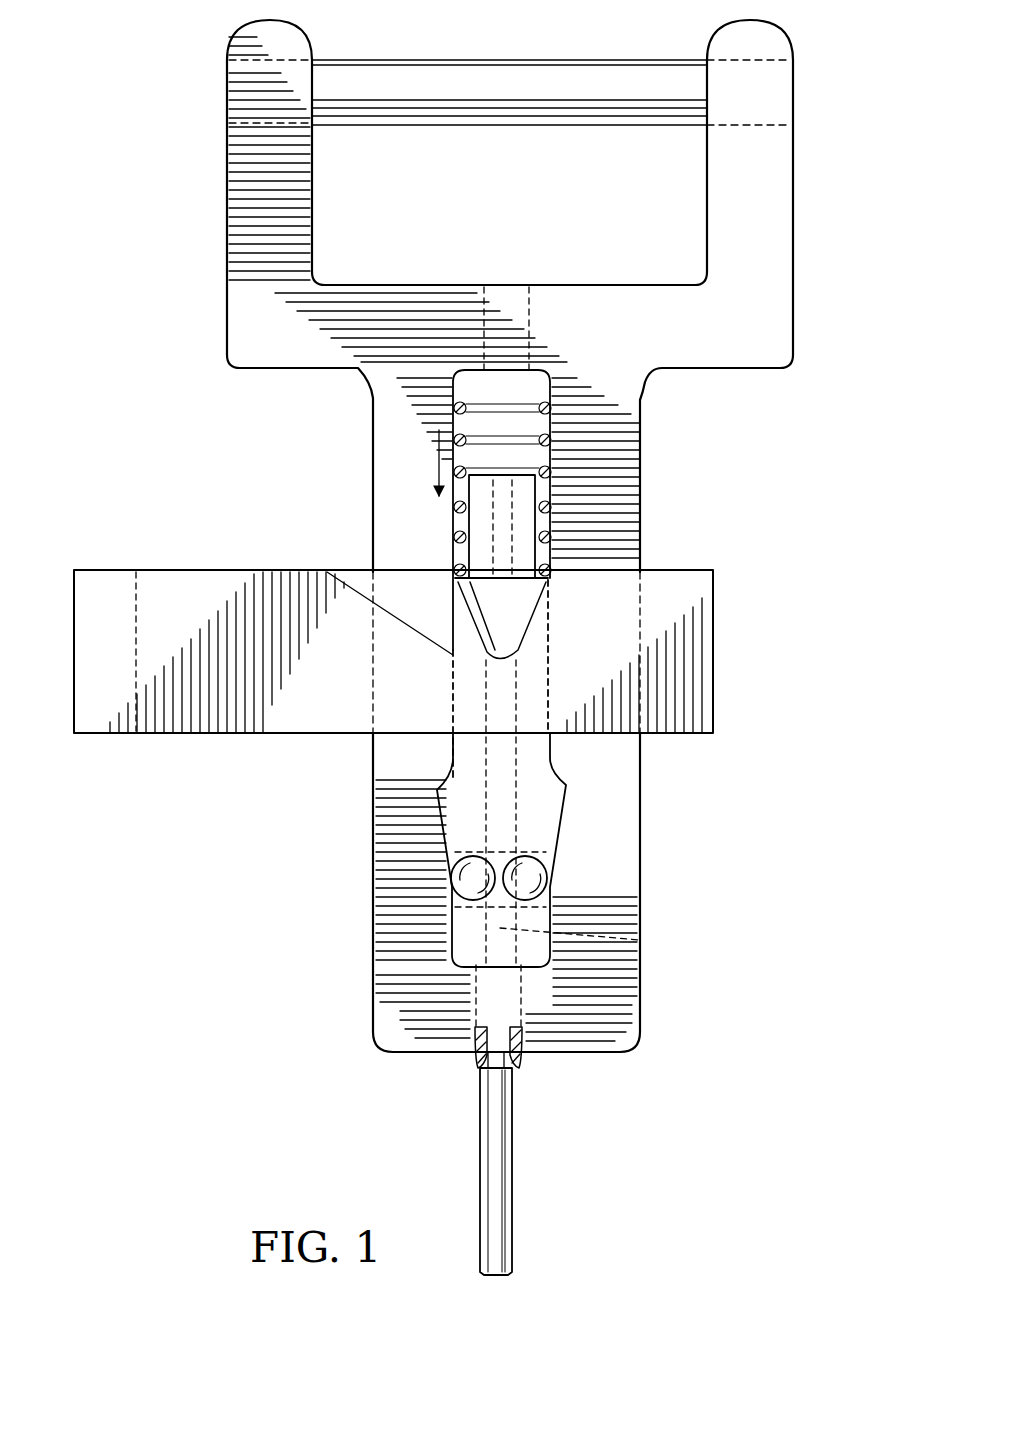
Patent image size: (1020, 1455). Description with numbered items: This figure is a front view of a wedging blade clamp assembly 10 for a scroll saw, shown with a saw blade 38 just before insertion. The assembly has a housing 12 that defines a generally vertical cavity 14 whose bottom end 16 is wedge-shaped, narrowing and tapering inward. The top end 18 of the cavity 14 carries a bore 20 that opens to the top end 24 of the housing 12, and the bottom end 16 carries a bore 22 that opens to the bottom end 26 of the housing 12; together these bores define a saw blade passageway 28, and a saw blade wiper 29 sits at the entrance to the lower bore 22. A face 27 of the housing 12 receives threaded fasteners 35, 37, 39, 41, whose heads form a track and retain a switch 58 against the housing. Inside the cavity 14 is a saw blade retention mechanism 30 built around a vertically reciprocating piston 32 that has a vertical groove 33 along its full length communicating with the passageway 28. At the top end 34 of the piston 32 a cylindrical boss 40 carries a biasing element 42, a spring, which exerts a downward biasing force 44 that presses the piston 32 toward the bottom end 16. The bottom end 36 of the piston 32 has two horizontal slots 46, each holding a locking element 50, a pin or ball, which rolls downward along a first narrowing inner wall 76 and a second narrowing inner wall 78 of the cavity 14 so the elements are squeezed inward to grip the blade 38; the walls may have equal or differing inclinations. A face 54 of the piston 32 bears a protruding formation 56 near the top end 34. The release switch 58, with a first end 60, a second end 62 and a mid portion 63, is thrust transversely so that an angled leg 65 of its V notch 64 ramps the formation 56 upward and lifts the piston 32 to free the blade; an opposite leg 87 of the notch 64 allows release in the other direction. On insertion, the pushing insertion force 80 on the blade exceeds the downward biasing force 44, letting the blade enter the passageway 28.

The wedging blade clamp assembly 10 is at (826, 62).
The housing 12 is at (768, 300).
The cavity 14 is at (432, 788).
The bottom end of the cavity 16 is at (530, 948).
The top end of the cavity 18 is at (452, 380).
The bore 20 is at (513, 312).
The bore 22 is at (490, 1012).
The top end of the housing 24 is at (430, 303).
The bottom end of the housing 26 is at (540, 1032).
The face of the housing 27 is at (620, 345).
The saw blade passageway 28 is at (642, 940).
The saw blade wiper 29 is at (476, 1056).
The saw blade retention mechanism 30 is at (540, 782).
The piston 32 is at (537, 747).
The vertical groove 33 is at (497, 815).
The top end of the piston 34 is at (553, 505).
The threaded fastener 35 is at (400, 556).
The bottom end of the piston 36 is at (462, 912).
The threaded fastener 37 is at (580, 556).
The saw blade 38 is at (495, 1172).
The threaded fastener 39 is at (398, 770).
The cylindrical boss 40 is at (522, 492).
The threaded fastener 41 is at (580, 770).
The biasing element 42 is at (548, 470).
The downward biasing force 44 is at (440, 473).
The slot 46 is at (470, 862).
The locking element 50 is at (450, 882).
The face of the piston 54 is at (438, 622).
The formation 56 is at (522, 588).
The switch 58 is at (182, 713).
The first end of the switch 60 is at (97, 665).
The second end of the switch 62 is at (697, 650).
The mid portion of the switch 63 is at (323, 713).
The V notch 64 is at (462, 640).
The angled leg 65 is at (455, 640).
The first narrowing inner wall 76 is at (440, 800).
The second narrowing inner wall 78 is at (555, 830).
The pushing insertion force 80 is at (531, 1092).
The opposite leg 87 is at (521, 628).